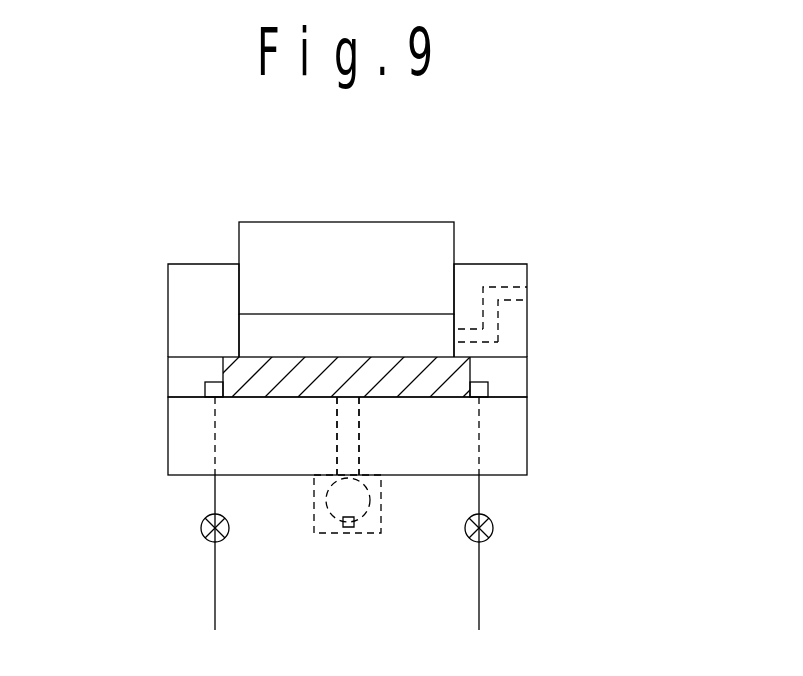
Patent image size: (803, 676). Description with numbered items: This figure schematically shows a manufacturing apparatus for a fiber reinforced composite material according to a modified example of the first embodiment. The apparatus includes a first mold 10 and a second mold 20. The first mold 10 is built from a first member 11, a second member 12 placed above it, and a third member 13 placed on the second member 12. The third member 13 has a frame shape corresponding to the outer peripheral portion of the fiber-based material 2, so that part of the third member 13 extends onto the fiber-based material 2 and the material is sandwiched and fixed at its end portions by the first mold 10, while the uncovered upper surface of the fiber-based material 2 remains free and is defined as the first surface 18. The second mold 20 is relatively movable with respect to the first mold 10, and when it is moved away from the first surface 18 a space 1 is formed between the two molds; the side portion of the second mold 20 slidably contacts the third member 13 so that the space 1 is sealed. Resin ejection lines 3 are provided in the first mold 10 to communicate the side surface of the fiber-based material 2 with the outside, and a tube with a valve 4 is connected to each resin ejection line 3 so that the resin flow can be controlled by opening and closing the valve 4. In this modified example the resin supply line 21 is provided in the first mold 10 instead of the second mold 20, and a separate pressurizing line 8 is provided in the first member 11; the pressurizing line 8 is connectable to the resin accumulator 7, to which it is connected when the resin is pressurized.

The space 1 is at (395, 332).
The fiber-based material 2 is at (425, 380).
The resin ejection line 3 is at (480, 457).
The valve 4 is at (494, 528).
The resin accumulator 7 is at (330, 525).
The pressurizing line 8 is at (333, 467).
The first mold 10 is at (92, 303).
The first member 11 is at (180, 435).
The second member 12 is at (180, 373).
The third member 13 is at (180, 338).
The first surface 18 is at (428, 358).
The second mold 20 is at (256, 242).
The resin supply line 21 is at (530, 317).